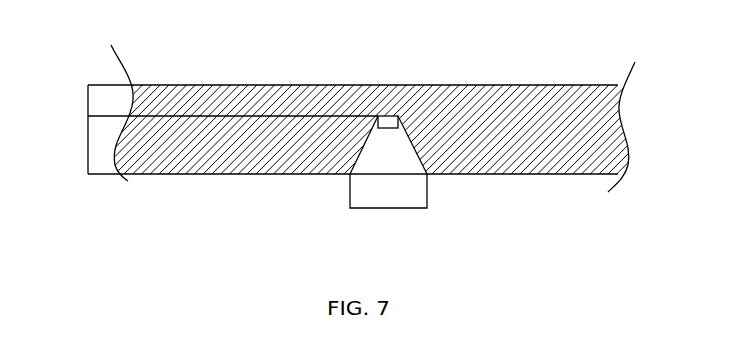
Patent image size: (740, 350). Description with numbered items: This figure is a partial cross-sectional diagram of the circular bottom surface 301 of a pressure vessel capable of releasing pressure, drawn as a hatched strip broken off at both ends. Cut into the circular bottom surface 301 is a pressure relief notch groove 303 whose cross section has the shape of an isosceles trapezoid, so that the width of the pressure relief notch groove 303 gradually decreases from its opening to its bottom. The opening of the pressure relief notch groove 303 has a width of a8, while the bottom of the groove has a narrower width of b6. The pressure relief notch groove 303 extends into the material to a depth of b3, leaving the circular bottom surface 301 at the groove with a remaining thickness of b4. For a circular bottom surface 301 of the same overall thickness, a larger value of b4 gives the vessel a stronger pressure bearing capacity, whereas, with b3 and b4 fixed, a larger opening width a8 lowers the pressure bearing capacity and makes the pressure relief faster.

The circular bottom surface 301 is at (379, 106).
The pressure relief notch groove 303 is at (431, 175).
The bottom width of the pressure relief notch groove b6 is at (389, 141).
The thickness of the circular bottom surface at the pressure relief notch groove b4 is at (64, 100).
The depth of the pressure relief notch groove b3 is at (64, 146).
The opening width of the pressure relief notch groove a8 is at (388, 207).